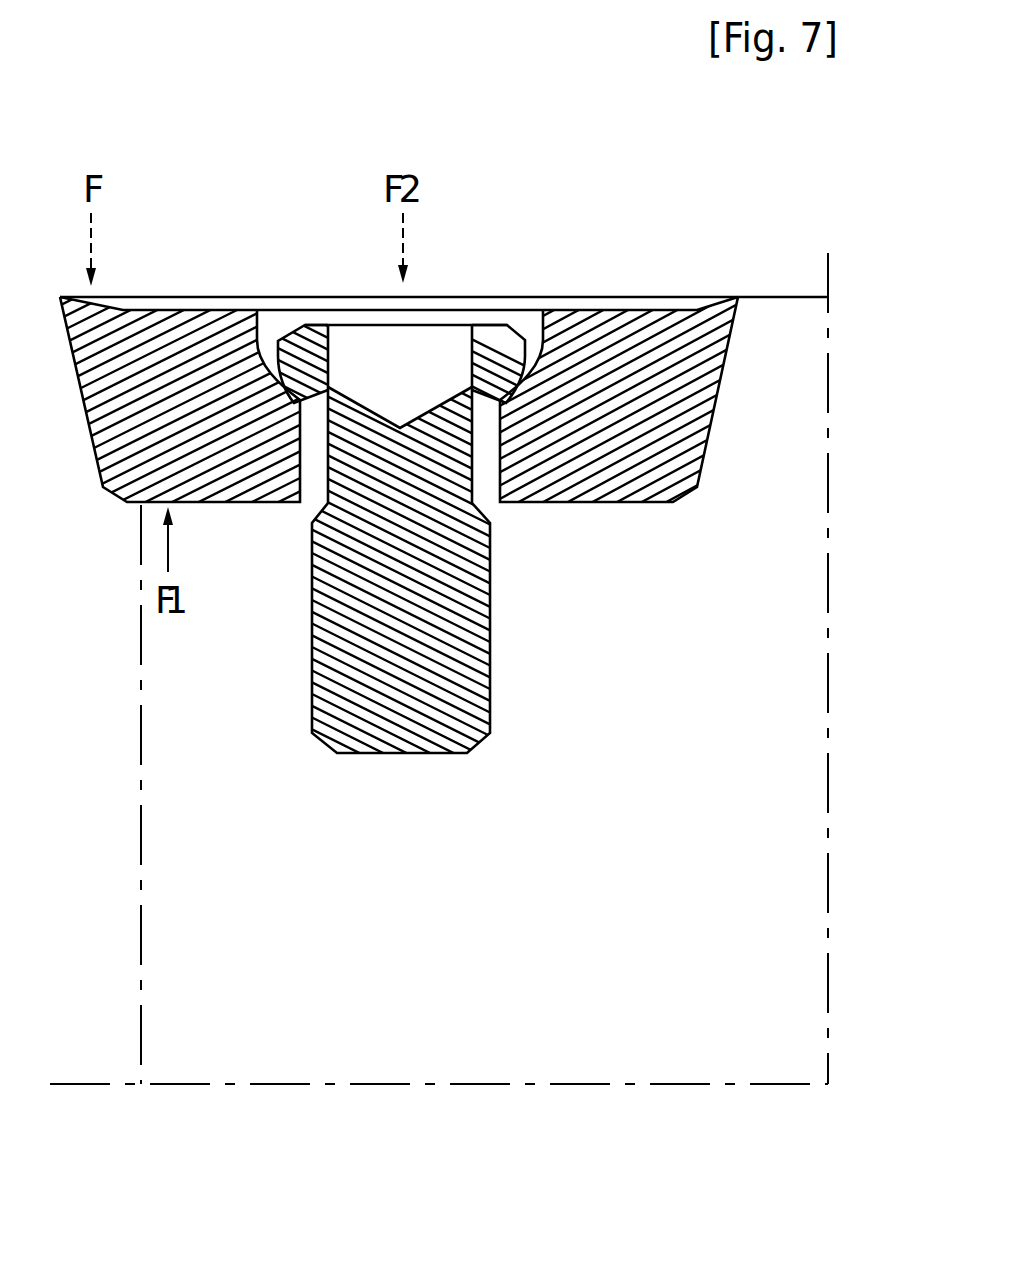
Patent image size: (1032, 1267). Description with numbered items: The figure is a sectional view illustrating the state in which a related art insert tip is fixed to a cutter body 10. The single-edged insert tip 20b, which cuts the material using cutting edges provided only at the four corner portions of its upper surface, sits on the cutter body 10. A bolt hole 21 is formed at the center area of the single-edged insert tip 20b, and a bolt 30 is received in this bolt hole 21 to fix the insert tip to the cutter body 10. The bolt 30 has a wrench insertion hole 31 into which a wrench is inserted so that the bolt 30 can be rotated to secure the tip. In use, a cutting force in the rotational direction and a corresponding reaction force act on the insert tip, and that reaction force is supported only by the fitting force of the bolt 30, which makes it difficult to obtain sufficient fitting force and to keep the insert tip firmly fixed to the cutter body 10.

The cutter body 10 is at (805, 842).
The single-edged insert tip 20b is at (620, 477).
The bolt hole 21 is at (315, 485).
The bolt 30 is at (502, 331).
The wrench insertion hole 31 is at (328, 355).